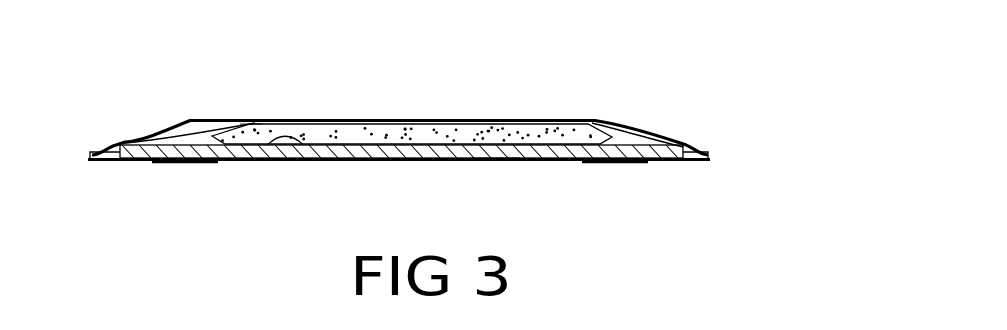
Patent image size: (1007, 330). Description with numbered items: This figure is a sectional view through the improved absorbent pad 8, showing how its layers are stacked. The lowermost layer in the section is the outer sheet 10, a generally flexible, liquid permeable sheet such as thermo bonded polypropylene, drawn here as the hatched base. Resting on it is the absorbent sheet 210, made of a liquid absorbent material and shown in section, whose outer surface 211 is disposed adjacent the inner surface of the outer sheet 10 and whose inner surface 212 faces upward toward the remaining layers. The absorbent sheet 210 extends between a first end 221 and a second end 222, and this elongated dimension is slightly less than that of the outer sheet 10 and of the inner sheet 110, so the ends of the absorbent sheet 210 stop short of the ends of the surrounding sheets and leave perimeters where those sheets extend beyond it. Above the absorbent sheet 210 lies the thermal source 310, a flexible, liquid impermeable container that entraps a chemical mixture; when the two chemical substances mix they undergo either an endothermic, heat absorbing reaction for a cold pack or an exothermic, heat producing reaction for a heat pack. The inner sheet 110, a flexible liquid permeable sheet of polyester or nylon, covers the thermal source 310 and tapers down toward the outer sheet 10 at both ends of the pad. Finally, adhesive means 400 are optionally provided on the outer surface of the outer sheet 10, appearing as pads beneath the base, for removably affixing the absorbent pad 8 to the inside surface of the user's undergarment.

The improved absorbent pad 8 is at (728, 130).
The outer sheet 10 is at (325, 160).
The inner sheet 110 is at (492, 121).
The absorbent sheet 210 is at (492, 160).
The outer surface 211 is at (262, 147).
The inner surface 212 is at (262, 125).
The first end 221 is at (223, 128).
The second end 222 is at (592, 123).
The thermal source 310 is at (355, 132).
The adhesive means 400 is at (163, 163).